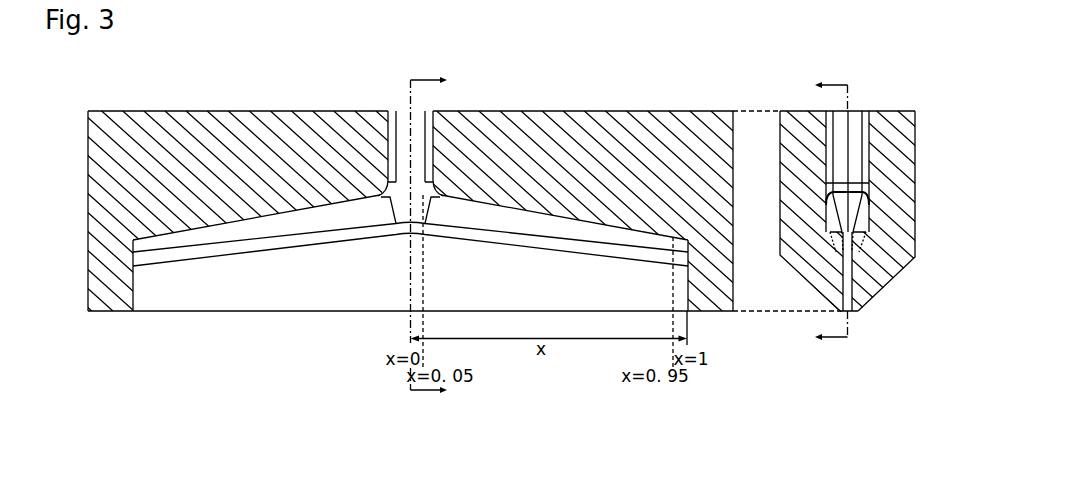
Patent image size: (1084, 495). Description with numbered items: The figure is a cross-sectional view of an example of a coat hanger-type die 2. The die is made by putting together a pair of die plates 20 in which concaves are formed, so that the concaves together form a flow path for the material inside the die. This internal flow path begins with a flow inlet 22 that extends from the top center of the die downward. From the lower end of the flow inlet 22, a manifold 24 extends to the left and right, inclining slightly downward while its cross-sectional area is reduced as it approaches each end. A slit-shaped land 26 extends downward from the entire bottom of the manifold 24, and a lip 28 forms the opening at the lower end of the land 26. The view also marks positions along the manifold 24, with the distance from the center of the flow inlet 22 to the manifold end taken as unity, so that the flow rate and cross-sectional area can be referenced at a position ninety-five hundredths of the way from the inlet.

The coat hanger-type die 2 is at (519, 95).
The die plates 20 is at (632, 111).
The flow inlet 22 is at (403, 110).
The manifold 24 is at (133, 251).
The land 26 is at (134, 297).
The lip 28 is at (202, 313).